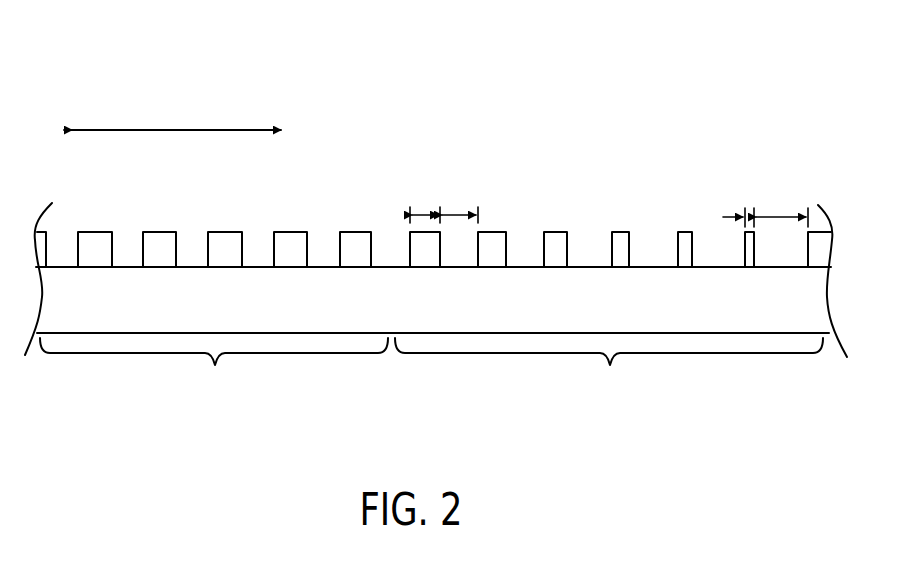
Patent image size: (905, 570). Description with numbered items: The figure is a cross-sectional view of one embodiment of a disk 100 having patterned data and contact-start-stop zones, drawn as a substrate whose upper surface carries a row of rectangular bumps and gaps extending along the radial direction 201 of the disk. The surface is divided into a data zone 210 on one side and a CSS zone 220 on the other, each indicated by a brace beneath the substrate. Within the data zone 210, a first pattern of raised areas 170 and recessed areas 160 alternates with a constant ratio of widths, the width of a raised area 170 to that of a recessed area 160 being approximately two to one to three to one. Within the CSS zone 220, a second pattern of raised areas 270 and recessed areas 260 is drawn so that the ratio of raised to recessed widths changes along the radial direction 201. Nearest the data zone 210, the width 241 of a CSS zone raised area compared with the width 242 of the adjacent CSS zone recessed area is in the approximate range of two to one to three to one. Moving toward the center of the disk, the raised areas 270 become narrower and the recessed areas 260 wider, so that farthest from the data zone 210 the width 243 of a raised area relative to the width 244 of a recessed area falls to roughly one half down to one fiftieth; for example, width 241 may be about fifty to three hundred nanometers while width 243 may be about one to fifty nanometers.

The disk 100 is at (557, 75).
The radial direction 201 is at (172, 89).
The data zone 210 is at (214, 381).
The CSS zone 220 is at (609, 381).
The raised areas 170 is at (105, 226).
The recessed areas 160 is at (137, 254).
The raised areas 270 is at (632, 226).
The recessed areas 260 is at (659, 256).
The width of CSS zone raised area 241 is at (428, 212).
The width of CSS zone recessed area 242 is at (468, 212).
The width of CSS zone raised area 243 is at (753, 210).
The width of CSS zone recessed area 244 is at (803, 212).